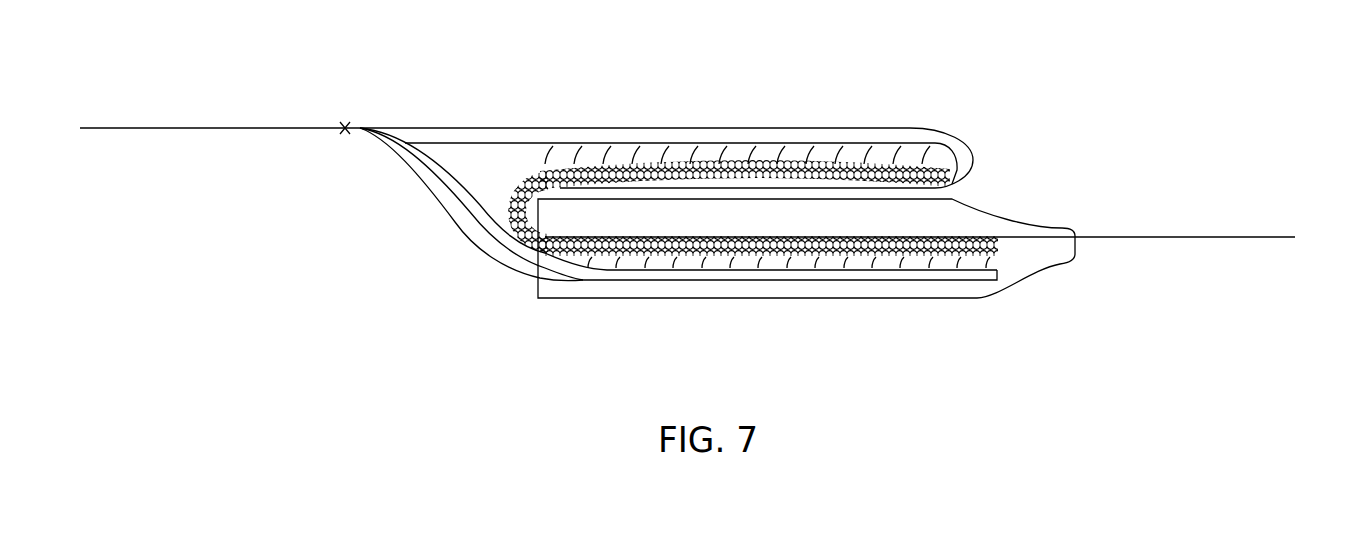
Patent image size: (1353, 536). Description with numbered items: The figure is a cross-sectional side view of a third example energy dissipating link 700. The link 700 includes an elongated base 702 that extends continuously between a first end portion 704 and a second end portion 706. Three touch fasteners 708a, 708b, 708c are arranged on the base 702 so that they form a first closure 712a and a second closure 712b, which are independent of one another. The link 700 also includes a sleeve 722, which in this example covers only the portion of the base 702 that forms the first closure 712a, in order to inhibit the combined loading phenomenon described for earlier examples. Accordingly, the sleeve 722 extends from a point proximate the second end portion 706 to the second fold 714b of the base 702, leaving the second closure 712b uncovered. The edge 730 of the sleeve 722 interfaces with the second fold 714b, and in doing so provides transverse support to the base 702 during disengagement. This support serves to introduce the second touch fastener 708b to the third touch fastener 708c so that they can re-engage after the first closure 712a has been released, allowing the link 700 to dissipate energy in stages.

The energy dissipating link 700 is at (364, 58).
The elongated base 702 is at (1126, 228).
The first end portion 704 is at (130, 128).
The second end portion 706 is at (1253, 236).
The first touch fastener 708a is at (597, 143).
The second touch fastener 708b is at (862, 258).
The third touch fastener 708c is at (608, 268).
The first closure 712a is at (776, 292).
The second closure 712b is at (766, 134).
The second fold 714b is at (522, 200).
The sleeve 722 is at (973, 300).
The edge 730 is at (537, 247).